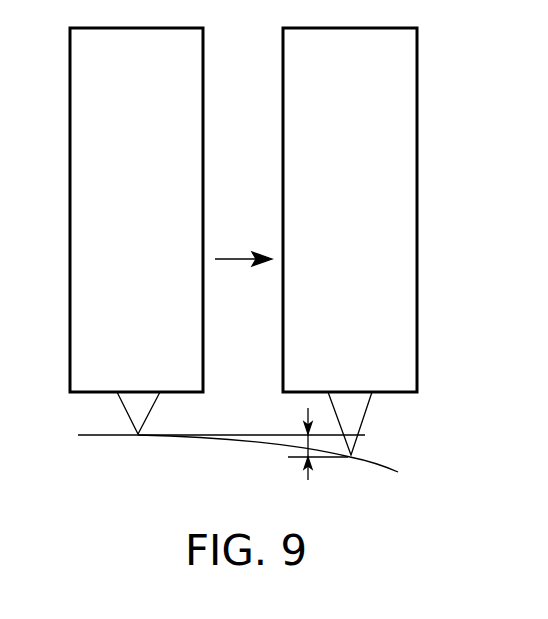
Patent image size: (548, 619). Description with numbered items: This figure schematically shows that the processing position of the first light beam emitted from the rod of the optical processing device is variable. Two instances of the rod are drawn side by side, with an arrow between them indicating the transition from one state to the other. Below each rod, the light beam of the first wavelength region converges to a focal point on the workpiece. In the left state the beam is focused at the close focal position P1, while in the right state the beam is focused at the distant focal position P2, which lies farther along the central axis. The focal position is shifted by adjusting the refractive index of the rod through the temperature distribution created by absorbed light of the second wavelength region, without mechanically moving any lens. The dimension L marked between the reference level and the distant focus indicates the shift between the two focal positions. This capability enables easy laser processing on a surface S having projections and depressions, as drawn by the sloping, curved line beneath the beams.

The surface S is at (388, 467).
The focal position P1 is at (139, 456).
The focal position P2 is at (353, 478).
The distance L is at (309, 443).